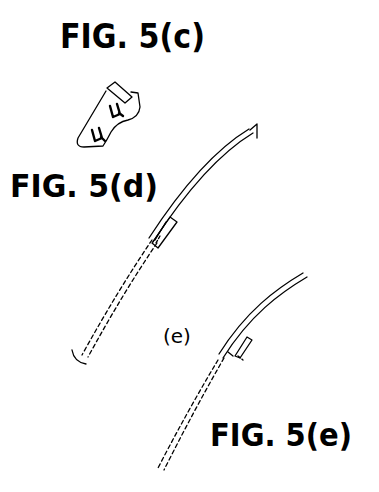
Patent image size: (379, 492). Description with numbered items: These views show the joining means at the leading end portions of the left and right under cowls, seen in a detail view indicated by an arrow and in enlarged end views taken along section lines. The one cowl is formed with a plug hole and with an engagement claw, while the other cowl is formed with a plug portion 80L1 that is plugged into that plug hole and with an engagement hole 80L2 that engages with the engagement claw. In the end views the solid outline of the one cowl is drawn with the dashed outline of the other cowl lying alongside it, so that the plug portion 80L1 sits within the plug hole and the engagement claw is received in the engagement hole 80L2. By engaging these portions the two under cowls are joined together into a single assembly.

The plug portion 80L1 is at (166, 247).
The engagement hole 80L2 is at (241, 358).